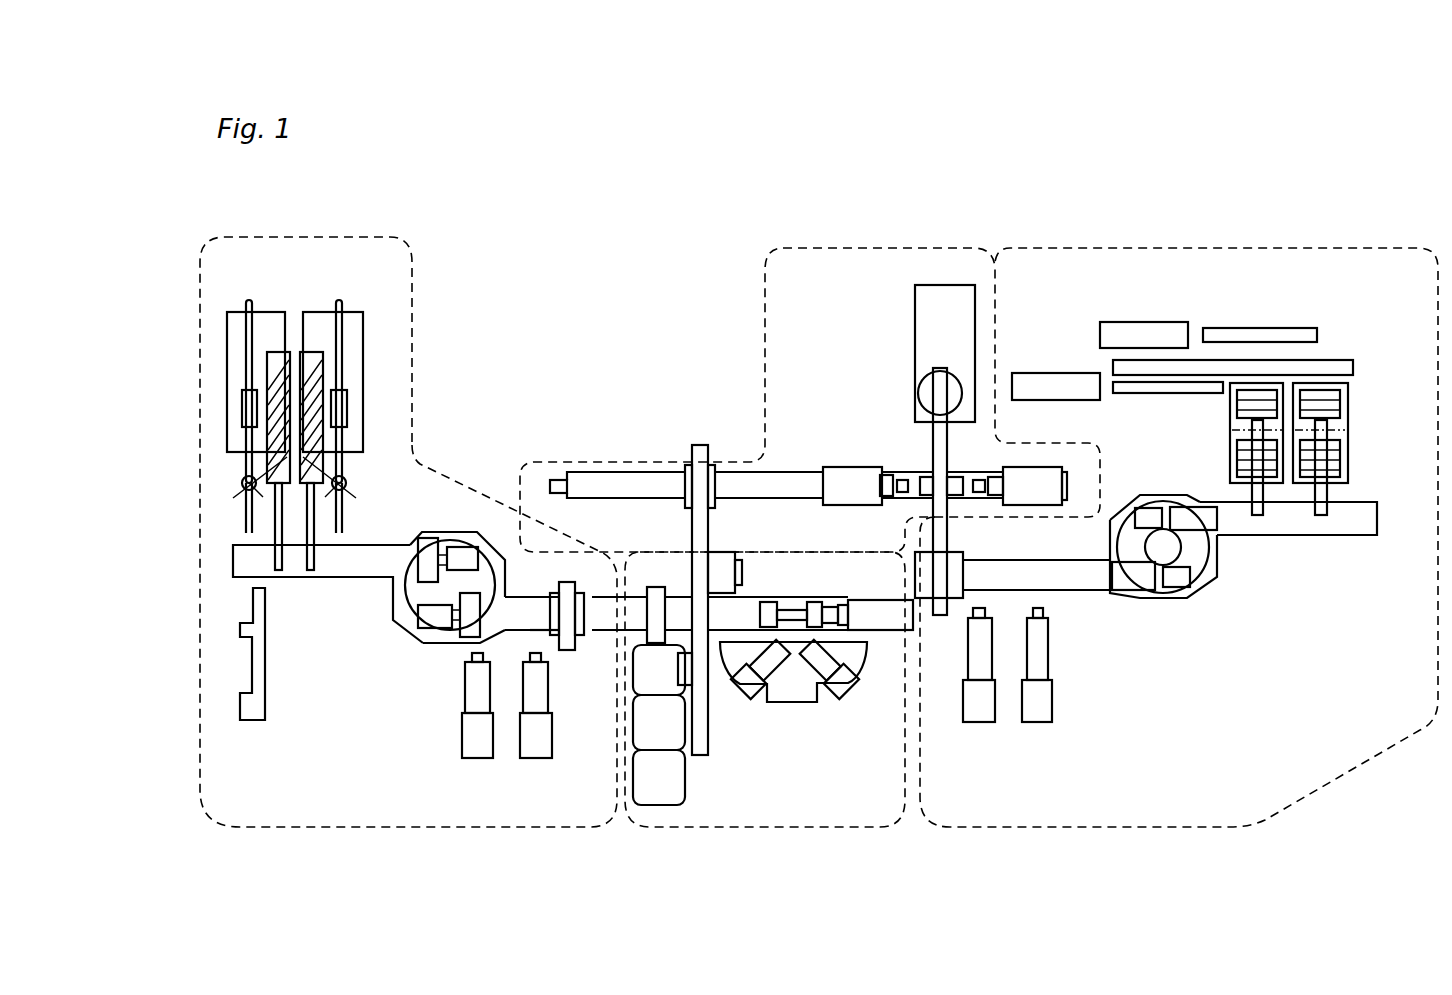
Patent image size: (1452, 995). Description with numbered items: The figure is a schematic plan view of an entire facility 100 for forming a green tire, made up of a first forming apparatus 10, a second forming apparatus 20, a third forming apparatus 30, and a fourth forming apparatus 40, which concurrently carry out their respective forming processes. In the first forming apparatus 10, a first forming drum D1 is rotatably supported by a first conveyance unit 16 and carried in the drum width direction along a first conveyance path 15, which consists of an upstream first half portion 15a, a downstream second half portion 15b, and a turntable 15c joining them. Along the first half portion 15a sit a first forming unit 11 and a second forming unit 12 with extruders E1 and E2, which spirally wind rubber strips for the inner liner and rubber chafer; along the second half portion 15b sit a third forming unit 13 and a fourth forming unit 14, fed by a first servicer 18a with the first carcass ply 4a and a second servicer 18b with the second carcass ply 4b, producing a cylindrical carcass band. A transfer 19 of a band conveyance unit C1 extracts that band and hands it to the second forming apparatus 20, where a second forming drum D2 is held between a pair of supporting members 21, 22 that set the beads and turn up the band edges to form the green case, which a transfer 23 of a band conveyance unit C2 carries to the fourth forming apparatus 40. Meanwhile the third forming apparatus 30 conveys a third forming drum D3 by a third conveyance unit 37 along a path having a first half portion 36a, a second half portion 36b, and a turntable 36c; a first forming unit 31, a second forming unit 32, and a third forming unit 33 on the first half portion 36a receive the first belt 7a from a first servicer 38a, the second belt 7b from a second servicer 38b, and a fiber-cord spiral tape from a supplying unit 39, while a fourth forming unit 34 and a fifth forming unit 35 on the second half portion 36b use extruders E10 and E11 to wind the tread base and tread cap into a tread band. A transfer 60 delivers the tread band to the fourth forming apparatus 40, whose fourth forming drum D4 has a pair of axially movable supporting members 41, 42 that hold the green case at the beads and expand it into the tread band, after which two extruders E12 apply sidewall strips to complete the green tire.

The facility 100 is at (560, 338).
The first forming apparatus 10 is at (1297, 248).
The second forming apparatus 20 is at (927, 246).
The third forming apparatus 30 is at (357, 829).
The fourth forming apparatus 40 is at (762, 829).
The first carcass ply 4a is at (1250, 397).
The second carcass ply 4b is at (1337, 397).
The first belt 7a is at (318, 390).
The second belt 7b is at (272, 390).
The first carcass band forming unit 11 is at (998, 604).
The second carcass band forming unit 12 is at (1041, 604).
The third carcass band forming unit 13 is at (1262, 520).
The fourth carcass band forming unit 14 is at (1300, 507).
The first conveyance path 15 is at (1250, 618).
The first half portion 15a is at (1080, 590).
The second half portion 15b is at (1330, 530).
The turntable 15c is at (1193, 585).
The first conveyance unit 16 is at (1148, 507).
The first servicer 18a is at (1275, 390).
The second servicer 18b is at (1352, 409).
The transfer 19 is at (960, 580).
The supporting member 21 is at (1045, 475).
The supporting member 22 is at (848, 474).
The transfer 23 is at (692, 478).
The first tread band forming unit 31 is at (339, 546).
The second tread band forming unit 32 is at (263, 555).
The third tread band forming unit 33 is at (243, 592).
The fourth tread band forming unit 34 is at (461, 658).
The fifth tread band forming unit 35 is at (533, 627).
The first half portion 36a is at (325, 563).
The second half portion 36b is at (542, 622).
The turntable 36c is at (410, 600).
The third conveyance unit 37 is at (462, 555).
The first servicer 38a is at (348, 331).
The second servicer 38b is at (242, 331).
The supplying unit 39 is at (247, 640).
The supporting member 41 is at (838, 648).
The supporting member 42 is at (762, 630).
The transfer 60 is at (566, 582).
The band conveyance unit C1 is at (953, 441).
The band conveyance unit C2 is at (698, 581).
The first forming drum D1 is at (1205, 540).
The second forming drum D2 is at (961, 475).
The third forming drum D3 is at (429, 534).
The fourth forming drum D4 is at (798, 627).
The extruder E1 is at (980, 715).
The extruder E2 is at (1043, 715).
The extruder E10 is at (478, 745).
The extruder E11 is at (545, 745).
The extruder E12 is at (848, 690).